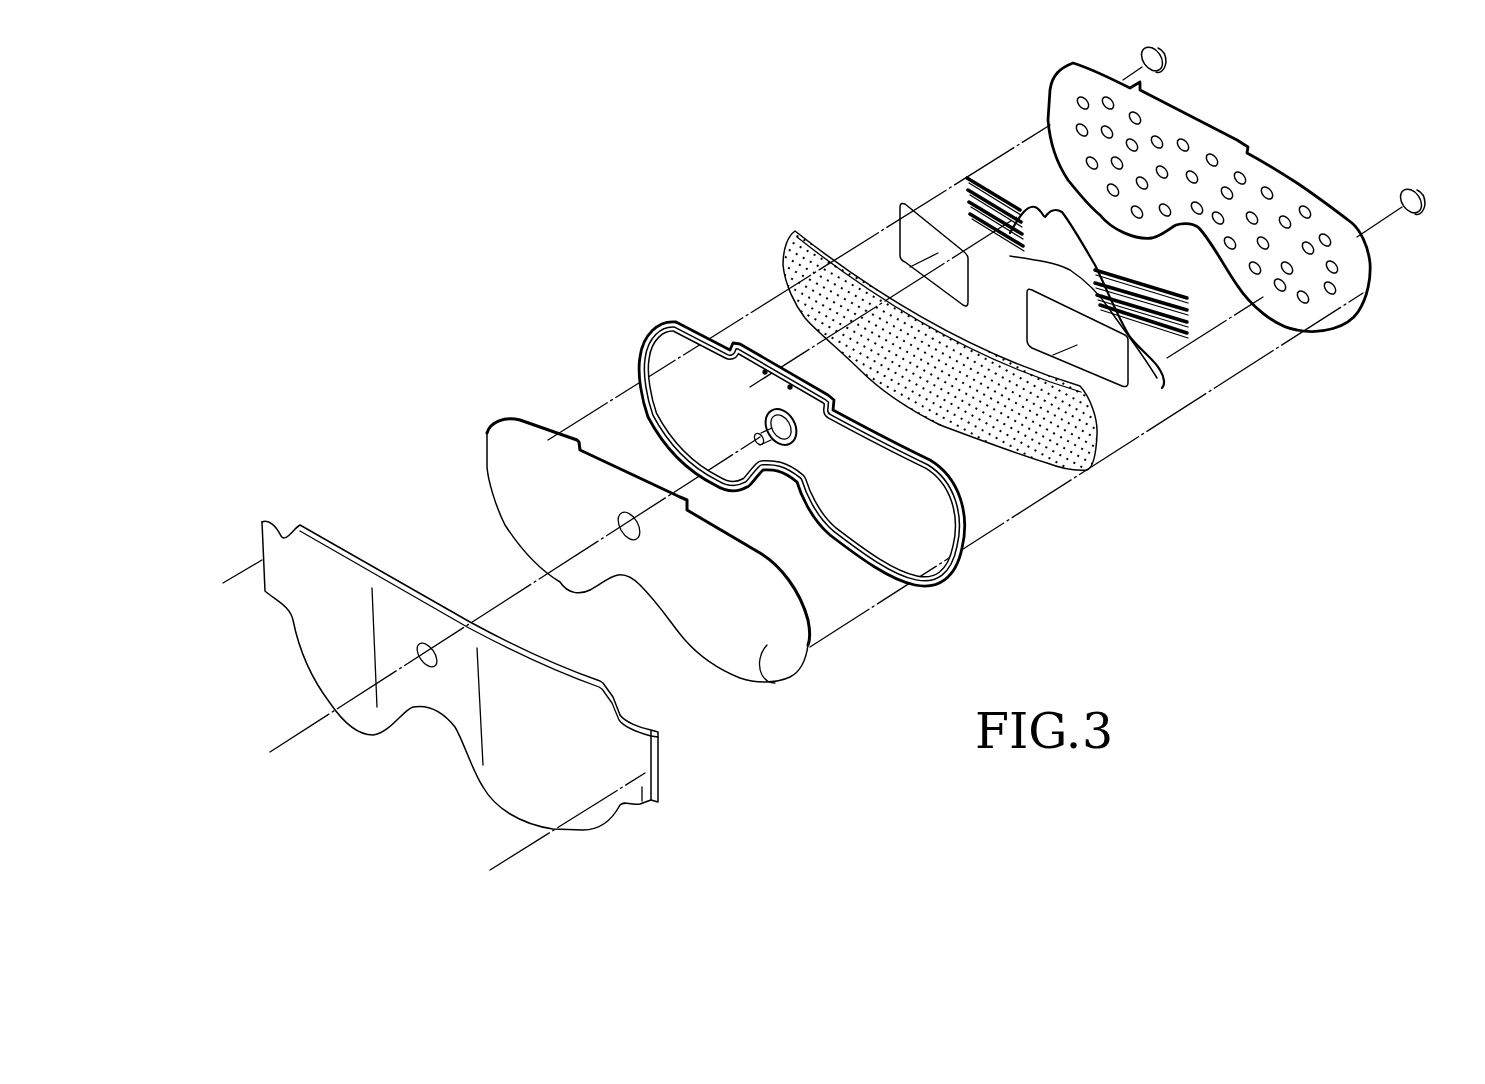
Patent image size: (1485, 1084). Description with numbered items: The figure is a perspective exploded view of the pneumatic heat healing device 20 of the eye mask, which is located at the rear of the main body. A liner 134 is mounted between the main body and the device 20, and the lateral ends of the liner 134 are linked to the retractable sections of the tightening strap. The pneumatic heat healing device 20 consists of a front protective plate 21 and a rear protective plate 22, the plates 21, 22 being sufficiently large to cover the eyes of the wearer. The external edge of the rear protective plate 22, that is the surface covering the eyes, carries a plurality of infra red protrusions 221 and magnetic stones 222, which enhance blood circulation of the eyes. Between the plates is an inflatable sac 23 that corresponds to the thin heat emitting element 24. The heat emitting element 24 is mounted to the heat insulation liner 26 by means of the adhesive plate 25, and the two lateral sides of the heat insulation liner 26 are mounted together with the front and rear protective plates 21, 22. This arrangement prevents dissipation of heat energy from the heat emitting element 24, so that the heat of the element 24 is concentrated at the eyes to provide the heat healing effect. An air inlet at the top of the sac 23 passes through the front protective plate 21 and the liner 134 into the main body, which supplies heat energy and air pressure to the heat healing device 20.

The pneumatic heat healing device 20 is at (818, 227).
The liner 134 is at (643, 792).
The front protective plate 21 is at (767, 645).
The sac 23 is at (920, 550).
The heat insulation liner 26 is at (1068, 449).
The adhesive plate 25 is at (1131, 346).
The heat emitting element 24 is at (1166, 336).
The rear protective plate 22 is at (1279, 169).
The infra red protrusions 221 is at (1281, 284).
The magnetic stones 222 is at (1412, 206).